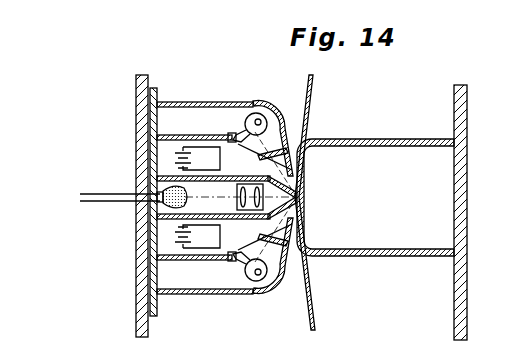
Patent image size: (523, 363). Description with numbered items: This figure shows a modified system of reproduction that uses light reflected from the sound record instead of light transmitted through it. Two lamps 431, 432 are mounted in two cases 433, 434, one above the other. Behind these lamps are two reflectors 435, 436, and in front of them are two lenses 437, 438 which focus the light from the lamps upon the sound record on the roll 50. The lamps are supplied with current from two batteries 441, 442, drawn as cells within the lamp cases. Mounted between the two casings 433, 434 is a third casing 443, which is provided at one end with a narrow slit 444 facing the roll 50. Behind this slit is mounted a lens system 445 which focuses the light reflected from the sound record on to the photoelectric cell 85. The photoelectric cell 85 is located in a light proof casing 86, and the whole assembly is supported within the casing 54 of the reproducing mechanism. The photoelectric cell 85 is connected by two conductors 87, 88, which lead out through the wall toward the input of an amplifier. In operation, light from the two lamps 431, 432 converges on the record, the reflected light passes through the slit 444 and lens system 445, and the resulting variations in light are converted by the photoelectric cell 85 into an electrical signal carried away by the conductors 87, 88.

The positive film 50 is at (313, 96).
The casing 54 is at (468, 121).
The photoelectric cell 85 is at (190, 197).
The light proof casing 86 is at (373, 141).
The conductor 87 is at (103, 202).
The conductor 88 is at (104, 196).
The lamp 431 is at (254, 120).
The lamp 432 is at (262, 294).
The case 433 is at (165, 103).
The case 434 is at (166, 294).
The reflector 435 is at (231, 117).
The reflector 436 is at (234, 283).
The lens 437 is at (268, 140).
The lens 438 is at (270, 262).
The battery 441 is at (176, 158).
The battery 442 is at (176, 237).
The third casing 443 is at (160, 178).
The narrow slit 444 is at (300, 196).
The lens system 445 is at (246, 203).